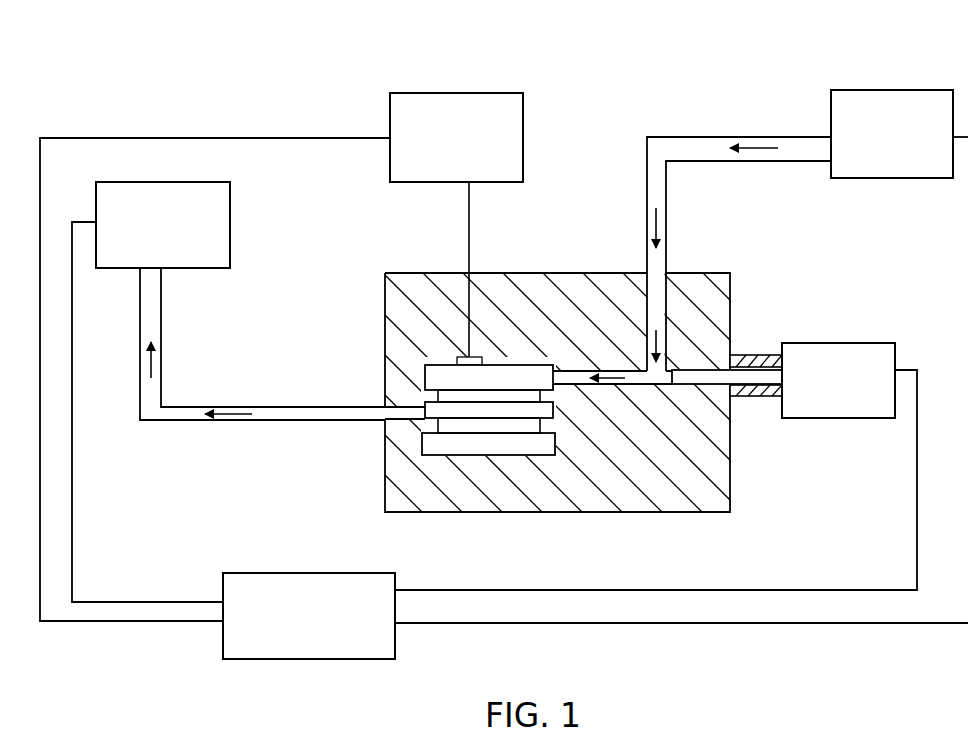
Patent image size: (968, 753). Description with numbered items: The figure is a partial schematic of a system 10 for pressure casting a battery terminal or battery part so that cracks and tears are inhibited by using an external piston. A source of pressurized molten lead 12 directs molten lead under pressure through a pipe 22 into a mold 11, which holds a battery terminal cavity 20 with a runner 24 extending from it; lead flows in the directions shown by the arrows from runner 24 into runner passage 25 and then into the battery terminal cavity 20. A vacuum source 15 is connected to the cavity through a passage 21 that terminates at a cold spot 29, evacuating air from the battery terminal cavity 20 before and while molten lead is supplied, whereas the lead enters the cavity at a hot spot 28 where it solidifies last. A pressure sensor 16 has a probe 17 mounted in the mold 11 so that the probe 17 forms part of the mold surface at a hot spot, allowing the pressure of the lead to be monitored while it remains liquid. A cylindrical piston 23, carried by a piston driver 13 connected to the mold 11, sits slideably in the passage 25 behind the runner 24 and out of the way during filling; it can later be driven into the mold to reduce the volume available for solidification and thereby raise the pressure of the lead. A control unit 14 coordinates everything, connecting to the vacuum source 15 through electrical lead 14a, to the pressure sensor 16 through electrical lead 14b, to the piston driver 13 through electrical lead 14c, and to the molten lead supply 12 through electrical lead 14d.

The system for pressure casting 10 is at (610, 71).
The mold 11 is at (553, 273).
The source of pressurized molten lead 12 is at (903, 90).
The piston driver 13 is at (835, 419).
The control unit 14 is at (300, 660).
The electrical lead 14a is at (163, 602).
The electrical lead 14b is at (148, 622).
The electrical lead 14c is at (517, 590).
The electrical lead 14d is at (527, 624).
The vacuum source 15 is at (230, 228).
The pressure sensor 16 is at (483, 92).
The probe 17 is at (478, 361).
The battery terminal cavity 20 is at (482, 455).
The passage 21 is at (268, 405).
The pipe 22 is at (752, 134).
The cylindrical piston 23 is at (721, 365).
The runner 24 is at (657, 304).
The runner passage 25 is at (648, 386).
The hot spot 28 is at (551, 366).
The cold spot 29 is at (421, 405).